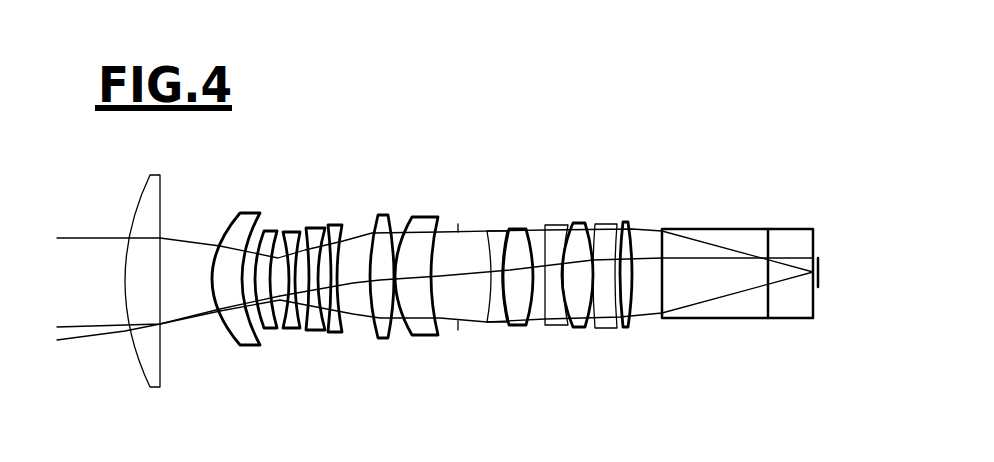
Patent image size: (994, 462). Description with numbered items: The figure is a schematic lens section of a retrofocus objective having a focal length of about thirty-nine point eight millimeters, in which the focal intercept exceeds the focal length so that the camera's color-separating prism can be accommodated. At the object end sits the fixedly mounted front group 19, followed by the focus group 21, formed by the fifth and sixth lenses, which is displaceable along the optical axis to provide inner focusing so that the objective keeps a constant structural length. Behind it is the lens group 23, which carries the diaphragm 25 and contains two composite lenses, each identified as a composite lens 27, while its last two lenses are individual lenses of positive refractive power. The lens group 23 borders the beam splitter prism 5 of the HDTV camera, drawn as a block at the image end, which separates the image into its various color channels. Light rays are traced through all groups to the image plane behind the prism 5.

The beam splitter prism 5 is at (726, 212).
The front group 19 is at (307, 352).
The focus group 21 is at (305, 342).
The lens group 23 is at (506, 304).
The diaphragm 25 is at (467, 343).
The composite lens 27 is at (511, 343).